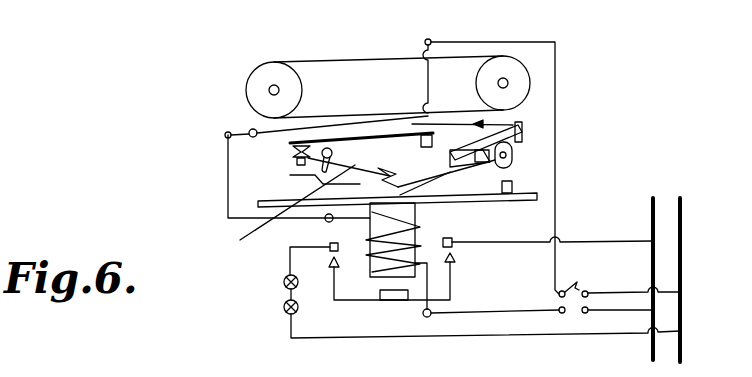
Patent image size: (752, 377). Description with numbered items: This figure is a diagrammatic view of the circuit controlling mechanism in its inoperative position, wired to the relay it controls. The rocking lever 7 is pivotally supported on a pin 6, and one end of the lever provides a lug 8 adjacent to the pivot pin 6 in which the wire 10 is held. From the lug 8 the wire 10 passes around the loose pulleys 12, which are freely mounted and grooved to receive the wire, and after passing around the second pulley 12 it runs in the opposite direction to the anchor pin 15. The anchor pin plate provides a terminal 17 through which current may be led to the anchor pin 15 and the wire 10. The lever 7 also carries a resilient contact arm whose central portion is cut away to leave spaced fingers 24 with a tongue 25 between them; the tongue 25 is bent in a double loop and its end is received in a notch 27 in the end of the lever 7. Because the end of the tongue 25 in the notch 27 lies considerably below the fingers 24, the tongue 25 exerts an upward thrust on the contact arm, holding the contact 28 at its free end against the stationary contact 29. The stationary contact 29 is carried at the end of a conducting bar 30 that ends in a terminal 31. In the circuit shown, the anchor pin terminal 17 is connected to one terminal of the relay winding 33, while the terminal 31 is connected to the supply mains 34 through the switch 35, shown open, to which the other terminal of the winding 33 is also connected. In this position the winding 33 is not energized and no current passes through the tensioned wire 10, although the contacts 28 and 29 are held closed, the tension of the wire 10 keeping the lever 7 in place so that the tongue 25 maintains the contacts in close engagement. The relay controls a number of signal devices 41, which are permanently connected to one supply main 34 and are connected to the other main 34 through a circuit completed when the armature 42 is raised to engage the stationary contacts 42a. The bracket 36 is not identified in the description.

The pin 6 is at (512, 157).
The rocking lever 7 is at (478, 145).
The lug 8 is at (523, 140).
The wire 10 is at (350, 117).
The loose pulley 12 is at (265, 72).
The anchor pin 15 is at (252, 129).
The terminal 17 is at (226, 132).
The fingers 24 is at (410, 150).
The tongue 25 is at (282, 209).
The notch 27 is at (400, 188).
The contact 28 is at (292, 154).
The stationary contact 29 is at (290, 144).
The conducting bar 30 is at (337, 128).
The terminal 31 is at (431, 40).
The relay winding 33 is at (390, 232).
The supply mains 34 is at (683, 272).
The switch 35 is at (568, 305).
The bracket 36 is at (290, 178).
The signal devices 41 is at (284, 305).
The armature 42 is at (348, 302).
The stationary contacts 42a is at (330, 249).